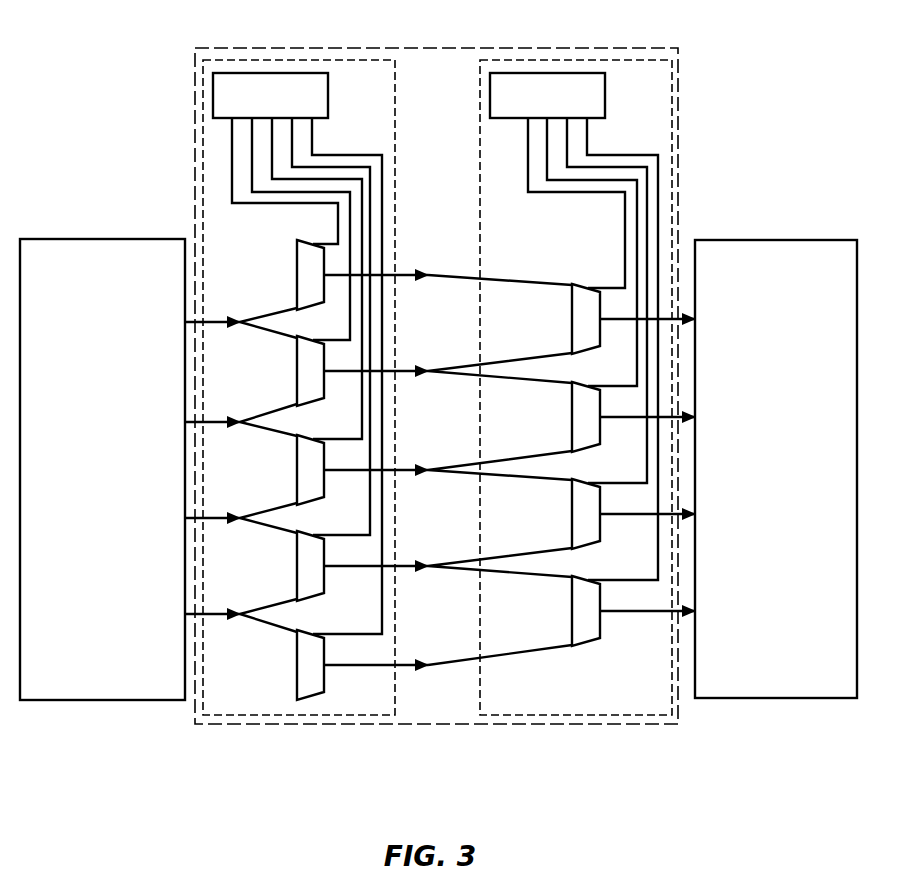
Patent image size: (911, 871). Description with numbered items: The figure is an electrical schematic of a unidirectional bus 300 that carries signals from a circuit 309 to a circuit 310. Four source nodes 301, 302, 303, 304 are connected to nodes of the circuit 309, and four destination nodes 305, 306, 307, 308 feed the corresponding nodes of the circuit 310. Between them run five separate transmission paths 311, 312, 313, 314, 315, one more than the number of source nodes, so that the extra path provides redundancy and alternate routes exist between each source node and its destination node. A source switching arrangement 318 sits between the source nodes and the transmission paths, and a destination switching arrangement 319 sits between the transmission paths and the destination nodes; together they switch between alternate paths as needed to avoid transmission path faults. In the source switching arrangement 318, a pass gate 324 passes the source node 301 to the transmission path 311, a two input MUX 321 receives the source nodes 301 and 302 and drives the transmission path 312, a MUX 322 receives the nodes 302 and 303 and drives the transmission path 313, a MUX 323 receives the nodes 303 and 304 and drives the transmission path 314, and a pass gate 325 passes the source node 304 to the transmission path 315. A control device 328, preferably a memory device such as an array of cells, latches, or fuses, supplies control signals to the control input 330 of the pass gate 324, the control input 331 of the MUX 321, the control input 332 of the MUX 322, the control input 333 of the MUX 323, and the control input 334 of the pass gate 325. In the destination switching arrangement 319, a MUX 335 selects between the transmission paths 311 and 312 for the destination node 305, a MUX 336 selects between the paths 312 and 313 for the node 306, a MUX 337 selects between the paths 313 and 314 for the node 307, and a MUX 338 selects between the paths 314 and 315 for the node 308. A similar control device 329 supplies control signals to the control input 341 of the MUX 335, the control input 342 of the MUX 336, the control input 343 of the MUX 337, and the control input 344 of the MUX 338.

The unidirectional bus 300 is at (436, 407).
The source node 301 is at (241, 313).
The source node 302 is at (241, 410).
The source node 303 is at (241, 508).
The source node 304 is at (241, 606).
The destination node 305 is at (681, 302).
The destination node 306 is at (681, 400).
The destination node 307 is at (681, 530).
The destination node 308 is at (681, 627).
The circuit 309 is at (84, 481).
The circuit 310 is at (759, 481).
The transmission path 311 is at (448, 257).
The transmission path 312 is at (448, 354).
The transmission path 313 is at (448, 453).
The transmission path 314 is at (448, 550).
The transmission path 315 is at (448, 646).
The source switching arrangement 318 is at (250, 387).
The destination switching arrangement 319 is at (625, 387).
The multiplexer 321 is at (297, 368).
The multiplexer 322 is at (297, 465).
The multiplexer 323 is at (297, 562).
The pass gate 324 is at (297, 258).
The pass gate 325 is at (297, 655).
The control device 328 is at (318, 64).
The control device 329 is at (595, 64).
The control input 330 is at (305, 240).
The control input 331 is at (301, 229).
The control input 332 is at (317, 278).
The control input 333 is at (331, 326).
The control input 334 is at (338, 376).
The multiplexer 335 is at (572, 322).
The multiplexer 336 is at (572, 430).
The multiplexer 337 is at (572, 525).
The multiplexer 338 is at (572, 622).
The control input 341 is at (576, 203).
The control input 342 is at (592, 252).
The control input 343 is at (607, 300).
The control input 344 is at (617, 349).